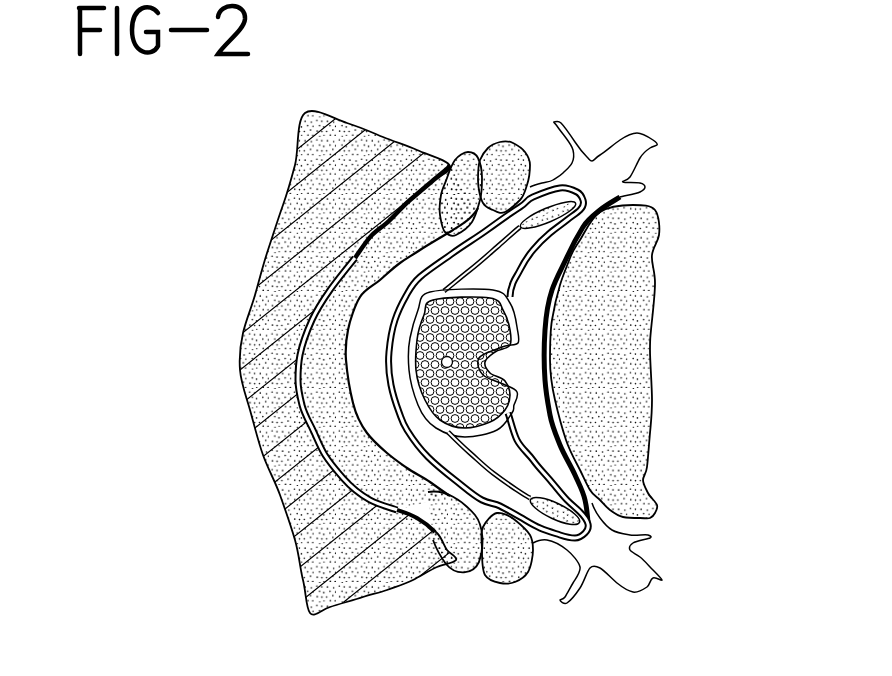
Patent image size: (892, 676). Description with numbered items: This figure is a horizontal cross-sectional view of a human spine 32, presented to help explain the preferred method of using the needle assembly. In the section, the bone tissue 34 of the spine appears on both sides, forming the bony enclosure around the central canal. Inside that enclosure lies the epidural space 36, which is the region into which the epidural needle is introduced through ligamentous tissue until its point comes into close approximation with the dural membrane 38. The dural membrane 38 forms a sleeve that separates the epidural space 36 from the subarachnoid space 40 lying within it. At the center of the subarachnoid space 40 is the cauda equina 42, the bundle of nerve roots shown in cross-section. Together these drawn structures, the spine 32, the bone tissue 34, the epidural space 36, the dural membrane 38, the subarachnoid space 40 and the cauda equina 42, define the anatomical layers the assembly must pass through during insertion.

The human spine 32 is at (517, 92).
The bone tissue 34 is at (327, 348).
The epidural space 36 is at (378, 423).
The dural membrane 38 is at (397, 307).
The subarachnoid space 40 is at (470, 473).
The cauda equina 42 is at (490, 394).